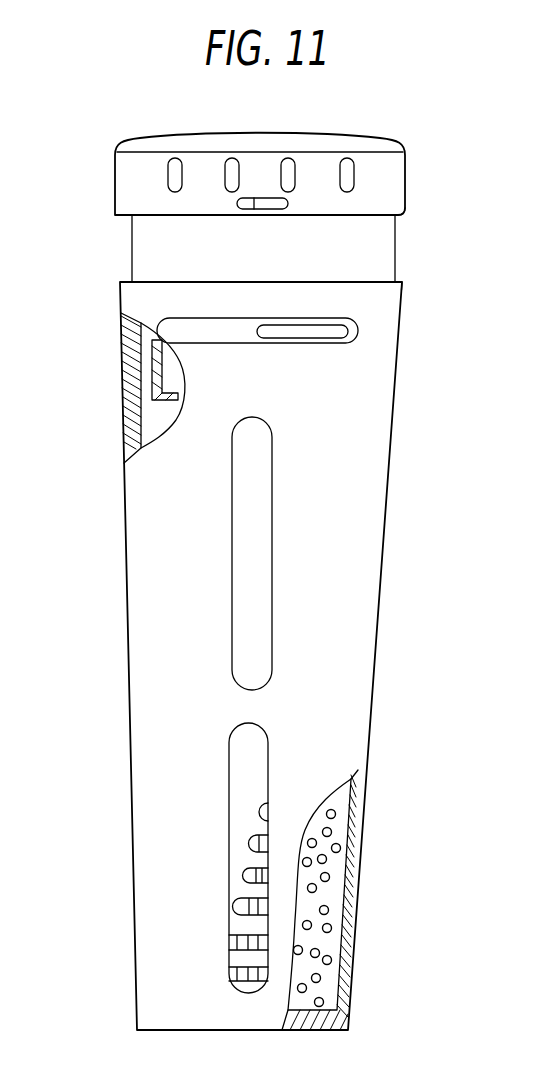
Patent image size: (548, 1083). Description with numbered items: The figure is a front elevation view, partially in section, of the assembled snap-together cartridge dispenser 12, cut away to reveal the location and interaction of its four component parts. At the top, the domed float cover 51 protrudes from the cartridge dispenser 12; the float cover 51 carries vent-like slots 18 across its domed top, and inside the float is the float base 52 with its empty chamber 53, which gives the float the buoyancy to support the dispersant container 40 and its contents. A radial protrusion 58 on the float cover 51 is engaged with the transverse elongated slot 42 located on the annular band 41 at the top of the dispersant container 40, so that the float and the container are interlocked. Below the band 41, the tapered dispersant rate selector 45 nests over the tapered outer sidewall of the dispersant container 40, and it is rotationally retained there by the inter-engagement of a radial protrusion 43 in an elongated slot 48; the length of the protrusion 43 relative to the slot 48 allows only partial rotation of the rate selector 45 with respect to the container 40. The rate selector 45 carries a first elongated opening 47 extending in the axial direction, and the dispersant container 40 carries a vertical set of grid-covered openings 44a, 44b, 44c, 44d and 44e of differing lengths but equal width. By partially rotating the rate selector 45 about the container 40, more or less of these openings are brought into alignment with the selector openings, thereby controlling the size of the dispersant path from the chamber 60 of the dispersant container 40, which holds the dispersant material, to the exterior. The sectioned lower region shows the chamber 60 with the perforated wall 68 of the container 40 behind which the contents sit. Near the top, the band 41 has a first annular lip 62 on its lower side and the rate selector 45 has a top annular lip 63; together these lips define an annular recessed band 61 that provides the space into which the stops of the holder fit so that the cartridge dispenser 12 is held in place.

The cartridge dispenser 12 is at (86, 156).
The vent slots 18 is at (241, 176).
The dispersant container 40 is at (358, 790).
The annular band 41 is at (405, 178).
The elongated slot 42 is at (278, 205).
The radial protrusion 43 is at (352, 344).
The opening 44a is at (228, 970).
The opening 44b is at (228, 942).
The opening 44c is at (233, 907).
The opening 44d is at (243, 875).
The opening 44e is at (250, 842).
The dispersant rate selector 45 is at (388, 520).
The first elongated opening 47 is at (255, 603).
The elongated slot 48 is at (305, 346).
The float cover 51 is at (386, 147).
The float base 52 is at (150, 398).
The empty chamber 53 is at (172, 374).
The first radial protrusion 58 is at (237, 203).
The chamber 60 is at (316, 988).
The annular recessed band 61 is at (372, 247).
The first annular lip 62 is at (404, 218).
The top annular lip 63 is at (403, 284).
The perforated panel 68 is at (314, 889).